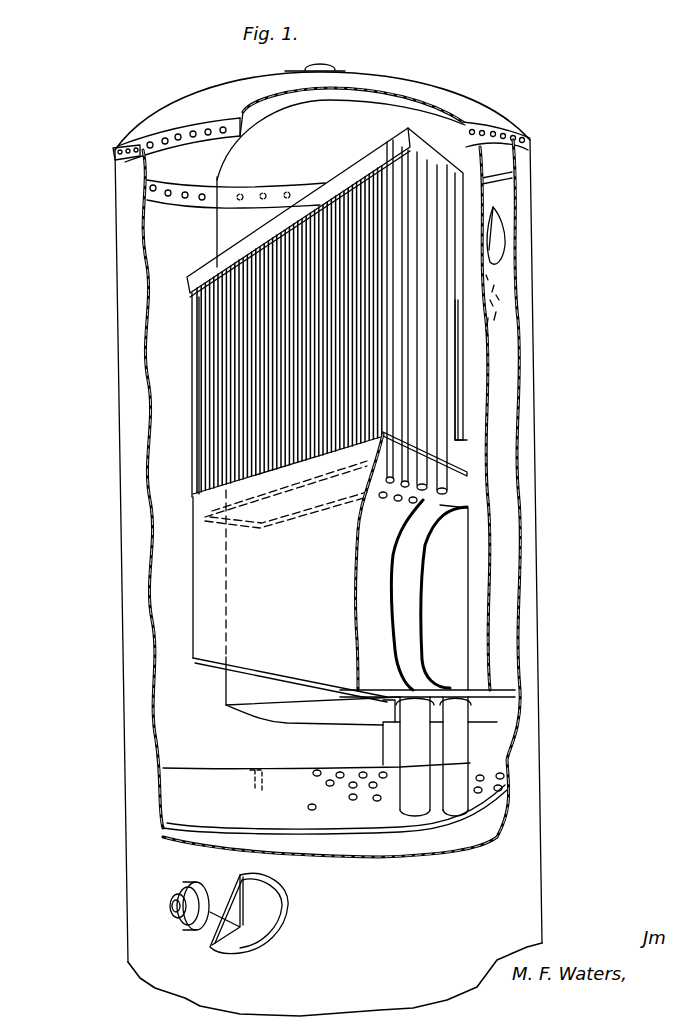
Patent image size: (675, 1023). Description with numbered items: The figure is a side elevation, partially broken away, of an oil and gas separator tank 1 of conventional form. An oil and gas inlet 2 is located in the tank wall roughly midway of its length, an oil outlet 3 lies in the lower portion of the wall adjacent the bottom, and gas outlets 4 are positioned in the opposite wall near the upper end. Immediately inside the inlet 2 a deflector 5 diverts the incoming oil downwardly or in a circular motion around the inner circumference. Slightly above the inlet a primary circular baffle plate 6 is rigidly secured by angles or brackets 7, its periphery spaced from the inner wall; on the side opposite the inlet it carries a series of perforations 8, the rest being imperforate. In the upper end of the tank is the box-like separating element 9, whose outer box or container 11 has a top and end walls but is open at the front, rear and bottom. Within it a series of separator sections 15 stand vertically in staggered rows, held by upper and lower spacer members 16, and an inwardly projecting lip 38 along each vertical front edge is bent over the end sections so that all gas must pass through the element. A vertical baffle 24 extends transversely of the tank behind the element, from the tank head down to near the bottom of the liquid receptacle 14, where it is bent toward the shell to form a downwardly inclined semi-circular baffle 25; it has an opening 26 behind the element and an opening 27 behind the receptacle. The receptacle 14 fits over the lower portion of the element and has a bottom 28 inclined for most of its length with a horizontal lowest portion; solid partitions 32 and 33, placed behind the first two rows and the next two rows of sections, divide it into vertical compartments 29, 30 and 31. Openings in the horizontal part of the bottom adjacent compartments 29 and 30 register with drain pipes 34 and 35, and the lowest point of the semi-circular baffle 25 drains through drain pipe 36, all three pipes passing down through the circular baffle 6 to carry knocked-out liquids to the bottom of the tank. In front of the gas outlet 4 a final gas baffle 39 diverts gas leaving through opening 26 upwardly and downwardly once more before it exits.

The separator tank 1 is at (113, 268).
The oil and gas inlet 2 is at (112, 164).
The oil outlet 3 is at (55, 613).
The gas outlets 4 is at (500, 254).
The deflector 5 is at (245, 915).
The primary circular baffle plate 6 is at (175, 810).
The angles or brackets 7 is at (252, 770).
The perforations 8 is at (329, 786).
The separating element 9 is at (425, 160).
The outer box or container 11 is at (437, 177).
The liquid receptacle 14 is at (210, 582).
The separator sections 15 is at (233, 355).
The spacer members 16 is at (467, 476).
The vertical baffle 24 is at (472, 174).
The semi-circular baffle 25 is at (497, 712).
The opening 26 is at (460, 377).
The opening 27 is at (460, 555).
The bottom 28 is at (287, 682).
The vertical compartment 29 is at (372, 620).
The vertical compartment 30 is at (380, 648).
The vertical compartment 31 is at (443, 592).
The solid partition 32 is at (365, 537).
The solid partition 33 is at (372, 562).
The drain pipe 34 is at (417, 768).
The drain pipe 35 is at (460, 748).
The drain pipe 36 is at (395, 750).
The inwardly projecting lip 38 is at (197, 395).
The final gas baffle 39 is at (488, 240).